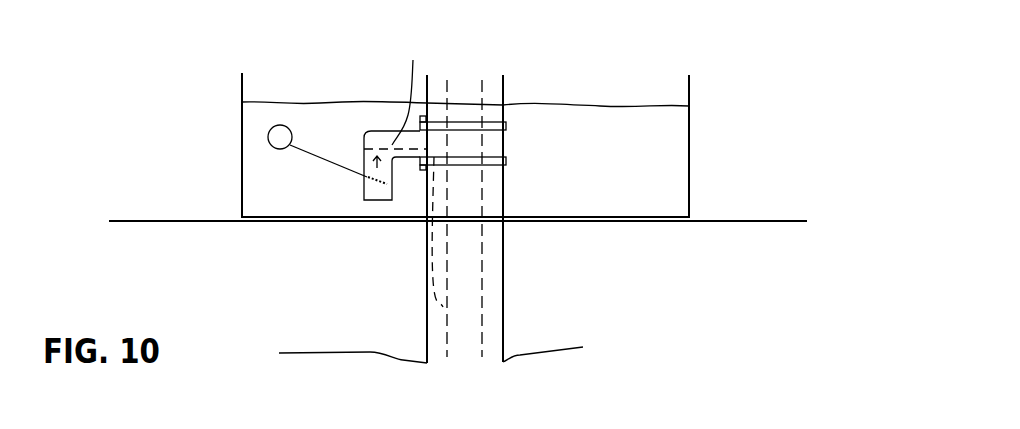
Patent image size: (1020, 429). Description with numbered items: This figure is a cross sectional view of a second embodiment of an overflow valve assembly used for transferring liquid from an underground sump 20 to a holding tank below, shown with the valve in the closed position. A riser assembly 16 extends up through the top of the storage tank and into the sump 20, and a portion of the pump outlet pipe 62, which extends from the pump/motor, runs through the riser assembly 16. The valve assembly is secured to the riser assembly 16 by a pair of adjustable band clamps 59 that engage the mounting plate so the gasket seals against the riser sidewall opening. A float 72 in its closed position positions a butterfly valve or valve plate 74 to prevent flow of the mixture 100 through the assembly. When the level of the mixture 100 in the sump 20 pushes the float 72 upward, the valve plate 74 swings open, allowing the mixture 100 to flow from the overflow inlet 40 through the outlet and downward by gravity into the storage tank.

The riser assembly 16 is at (503, 287).
The sump 20 is at (693, 135).
The overflow inlet 40 is at (378, 202).
The adjustable band clamps 59 is at (492, 160).
The pump outlet pipe 62 is at (482, 200).
The float 72 is at (285, 126).
The valve plate 74 is at (362, 191).
The mixture 100 is at (388, 147).